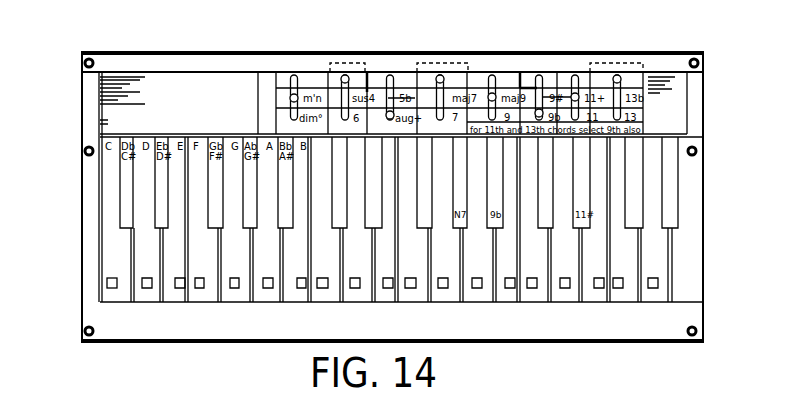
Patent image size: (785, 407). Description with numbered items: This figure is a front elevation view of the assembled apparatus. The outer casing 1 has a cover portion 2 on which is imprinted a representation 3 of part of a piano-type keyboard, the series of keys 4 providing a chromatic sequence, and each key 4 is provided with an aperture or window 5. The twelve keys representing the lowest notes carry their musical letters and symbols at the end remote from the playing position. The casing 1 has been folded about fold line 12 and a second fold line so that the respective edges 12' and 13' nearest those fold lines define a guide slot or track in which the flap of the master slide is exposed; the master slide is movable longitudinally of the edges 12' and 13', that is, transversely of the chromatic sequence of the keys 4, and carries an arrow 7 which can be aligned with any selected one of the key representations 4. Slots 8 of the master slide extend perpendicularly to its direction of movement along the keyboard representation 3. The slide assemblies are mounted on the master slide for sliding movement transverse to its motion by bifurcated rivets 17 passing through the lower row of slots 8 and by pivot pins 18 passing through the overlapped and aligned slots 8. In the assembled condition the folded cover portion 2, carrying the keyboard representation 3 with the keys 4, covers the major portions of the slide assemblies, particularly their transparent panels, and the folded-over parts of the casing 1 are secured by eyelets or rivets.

The casing 1 is at (712, 138).
The cover portion 2 is at (143, 248).
The keyboard representation 3 is at (97, 182).
The key 4 is at (673, 193).
The window 5 is at (107, 283).
The arrow 7 is at (258, 131).
The slots 8 is at (296, 75).
The fold line 12 is at (392, 43).
The edge 12' is at (393, 103).
The edge 13' is at (401, 121).
The bifurcated rivets 17 is at (348, 27).
The pivot pins 18 is at (619, 77).